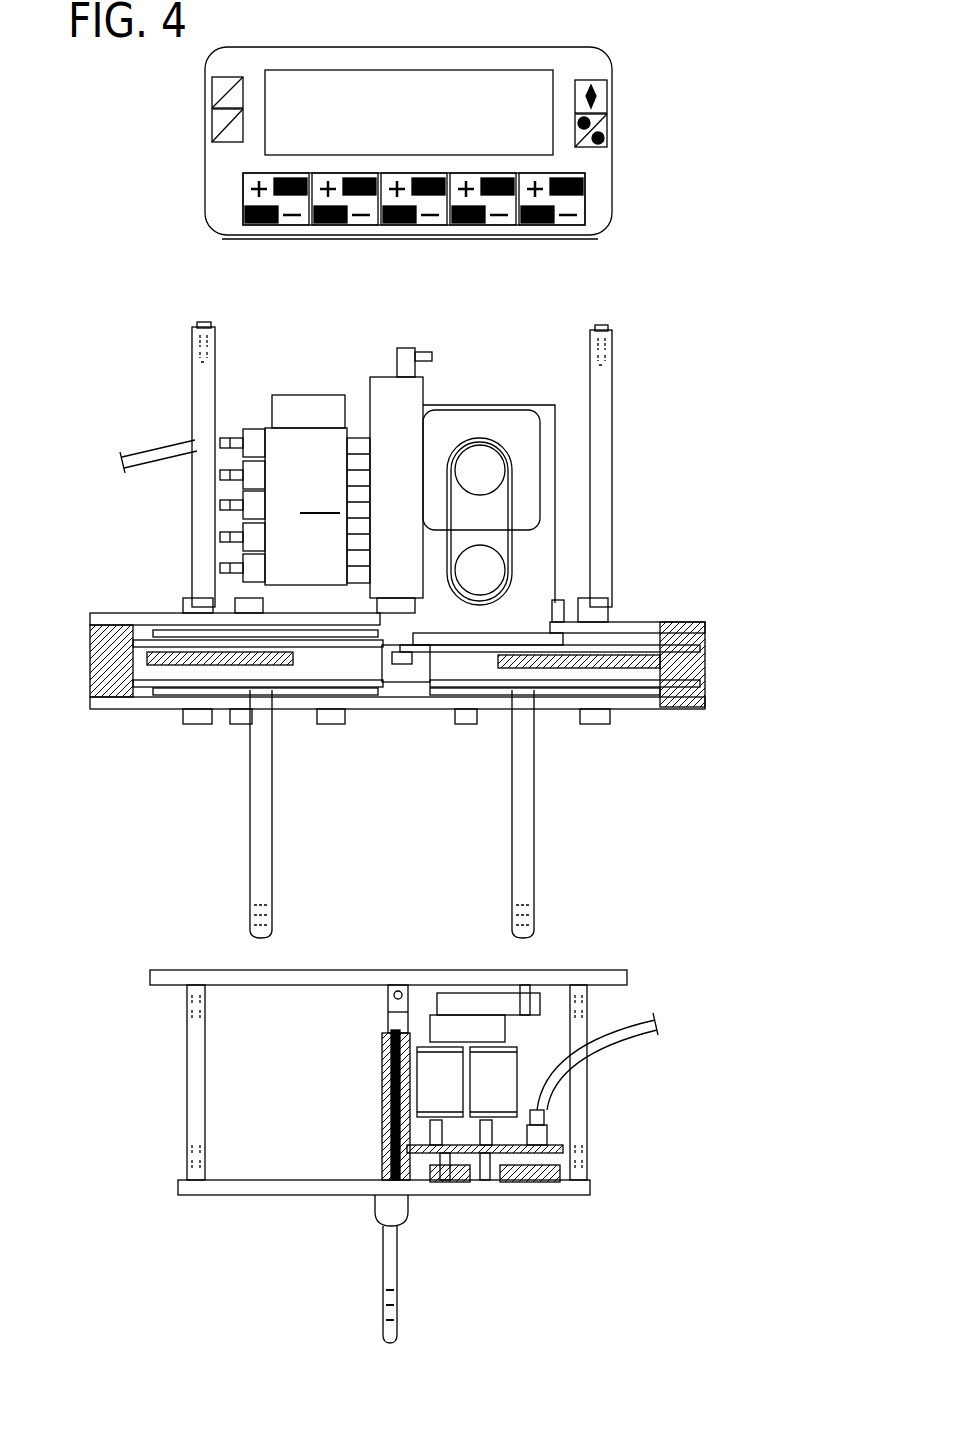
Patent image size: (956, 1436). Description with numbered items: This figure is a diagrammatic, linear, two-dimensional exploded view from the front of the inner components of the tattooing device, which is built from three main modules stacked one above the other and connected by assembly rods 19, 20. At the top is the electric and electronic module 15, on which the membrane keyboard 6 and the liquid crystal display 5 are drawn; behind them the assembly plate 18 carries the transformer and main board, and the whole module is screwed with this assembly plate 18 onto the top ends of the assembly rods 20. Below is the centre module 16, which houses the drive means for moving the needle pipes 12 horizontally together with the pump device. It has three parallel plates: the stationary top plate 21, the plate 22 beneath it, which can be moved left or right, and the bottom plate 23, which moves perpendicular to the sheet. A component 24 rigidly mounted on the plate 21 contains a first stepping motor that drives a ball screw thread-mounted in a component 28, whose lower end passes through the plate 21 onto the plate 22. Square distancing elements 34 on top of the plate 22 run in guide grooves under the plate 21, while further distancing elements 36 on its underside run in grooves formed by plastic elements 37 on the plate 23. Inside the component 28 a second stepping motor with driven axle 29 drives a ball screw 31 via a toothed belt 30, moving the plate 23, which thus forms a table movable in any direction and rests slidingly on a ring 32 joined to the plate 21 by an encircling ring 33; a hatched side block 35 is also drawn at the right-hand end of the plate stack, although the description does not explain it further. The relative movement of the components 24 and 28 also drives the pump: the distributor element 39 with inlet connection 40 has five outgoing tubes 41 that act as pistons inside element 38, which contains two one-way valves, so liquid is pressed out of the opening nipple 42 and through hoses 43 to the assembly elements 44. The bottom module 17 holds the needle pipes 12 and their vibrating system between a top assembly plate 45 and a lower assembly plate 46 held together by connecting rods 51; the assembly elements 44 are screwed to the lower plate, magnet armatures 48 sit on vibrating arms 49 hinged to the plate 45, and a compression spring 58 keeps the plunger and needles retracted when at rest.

The electric and electronic module 15 is at (173, 138).
The liquid crystal display 5 is at (540, 125).
The membrane keyboard 6 is at (575, 205).
The assembly plate 18 is at (286, 238).
The centre module 16 is at (120, 362).
The assembly rod 20 is at (605, 425).
The pump element 38 is at (306, 506).
The component 24 is at (290, 420).
The opening nipple 42 is at (225, 438).
The hose 43 is at (135, 455).
The outgoing tube 41 is at (355, 445).
The distributor element 39 is at (372, 415).
The inlet connection 40 is at (415, 350).
The component 28 is at (548, 438).
The driven axle 29 is at (478, 455).
The toothed belt 30 is at (510, 510).
The ball screw 31 is at (488, 575).
The top plate 21 is at (620, 605).
The plate 22 is at (632, 628).
The ring 32 is at (117, 705).
The side block 35 is at (700, 660).
The bottom plate 23 is at (165, 690).
The distancing element 36 is at (225, 690).
The distancing element 34 is at (285, 690).
The plastic element 37 is at (375, 682).
The encircling ring 33 is at (400, 665).
The assembly rod 19 is at (536, 848).
The bottom module 17 is at (120, 1002).
The top assembly plate 45 is at (585, 980).
The connecting rod 51 is at (580, 1088).
The lower assembly plate 46 is at (590, 1195).
The compression spring 58 is at (385, 1036).
The vibrating arm 49 is at (428, 1003).
The magnet armature 48 is at (482, 1003).
The assembly element 44 is at (530, 1172).
The needle pipe 12 is at (400, 1268).